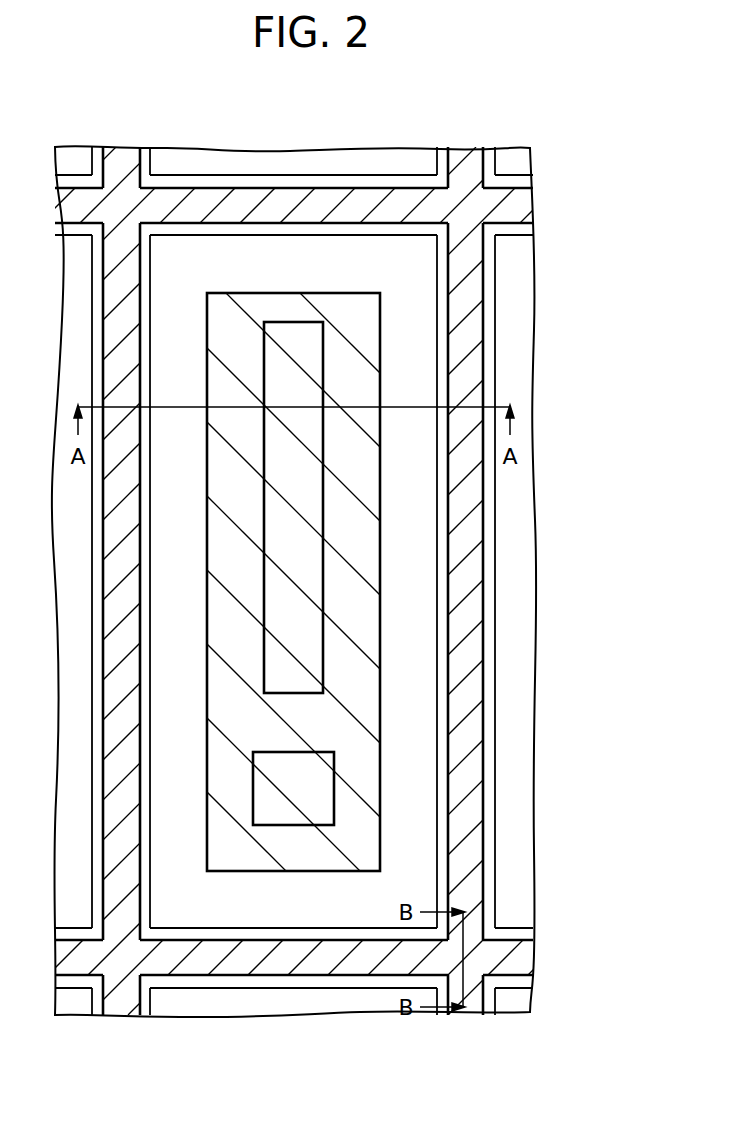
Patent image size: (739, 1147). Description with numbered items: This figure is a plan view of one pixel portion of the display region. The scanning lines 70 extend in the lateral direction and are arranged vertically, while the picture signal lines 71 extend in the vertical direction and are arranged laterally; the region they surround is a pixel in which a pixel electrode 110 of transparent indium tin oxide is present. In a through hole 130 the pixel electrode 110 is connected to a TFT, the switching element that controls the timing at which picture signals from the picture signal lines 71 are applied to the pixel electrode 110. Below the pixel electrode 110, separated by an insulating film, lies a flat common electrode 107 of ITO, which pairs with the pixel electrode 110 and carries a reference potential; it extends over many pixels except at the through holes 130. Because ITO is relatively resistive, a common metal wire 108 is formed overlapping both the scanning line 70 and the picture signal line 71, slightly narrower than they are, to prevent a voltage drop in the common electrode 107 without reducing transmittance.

The scanning line 70 is at (307, 982).
The picture signal line 71 is at (488, 523).
The common electrode 107 is at (415, 567).
The common metal wire 108 is at (472, 588).
The pixel electrode 110 is at (355, 677).
The through hole 130 is at (312, 788).